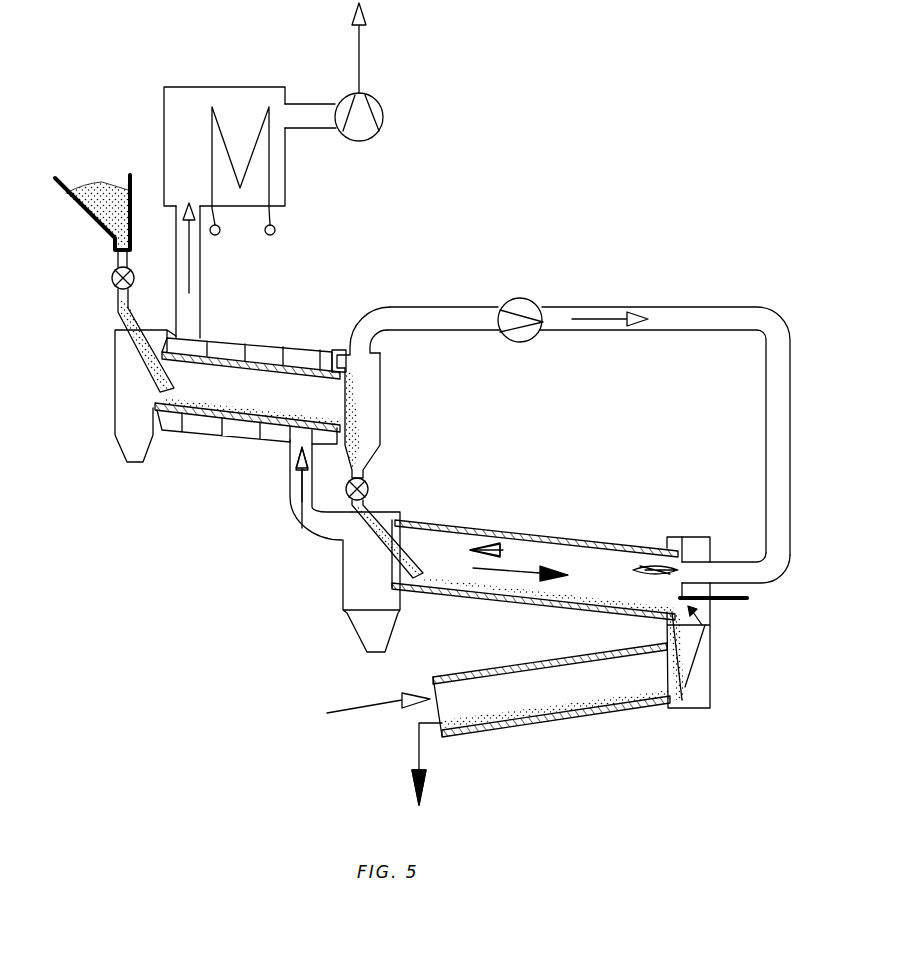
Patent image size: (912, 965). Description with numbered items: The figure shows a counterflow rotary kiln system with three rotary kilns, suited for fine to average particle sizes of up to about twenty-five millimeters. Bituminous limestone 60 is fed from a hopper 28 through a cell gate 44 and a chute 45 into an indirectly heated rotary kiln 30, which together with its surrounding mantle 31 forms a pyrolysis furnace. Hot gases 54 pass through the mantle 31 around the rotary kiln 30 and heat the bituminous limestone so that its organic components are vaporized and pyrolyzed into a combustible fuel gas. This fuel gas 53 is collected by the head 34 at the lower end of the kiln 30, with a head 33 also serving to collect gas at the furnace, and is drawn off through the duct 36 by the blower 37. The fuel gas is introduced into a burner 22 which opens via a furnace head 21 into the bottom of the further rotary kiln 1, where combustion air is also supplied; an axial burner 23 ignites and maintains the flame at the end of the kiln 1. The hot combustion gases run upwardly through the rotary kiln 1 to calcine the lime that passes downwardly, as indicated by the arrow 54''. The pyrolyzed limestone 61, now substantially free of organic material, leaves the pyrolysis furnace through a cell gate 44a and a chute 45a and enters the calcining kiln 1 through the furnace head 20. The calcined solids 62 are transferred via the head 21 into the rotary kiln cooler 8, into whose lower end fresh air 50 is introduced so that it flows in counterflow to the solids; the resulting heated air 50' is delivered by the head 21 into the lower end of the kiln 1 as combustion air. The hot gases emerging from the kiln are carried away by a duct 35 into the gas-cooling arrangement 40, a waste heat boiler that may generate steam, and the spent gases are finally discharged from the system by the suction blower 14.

The rotary kiln 1 is at (598, 523).
The rotary kiln cooler 8 is at (563, 717).
The suction blower 14 is at (383, 117).
The furnace head 20 is at (345, 583).
The furnace head 21 is at (672, 535).
The burner 22 is at (700, 535).
The axial burner 23 is at (735, 602).
The hopper 28 is at (71, 178).
The indirectly heated rotary kiln 30 is at (207, 418).
The mantle 31 is at (303, 342).
The head 33 is at (113, 413).
The head 34 is at (382, 370).
The product duct 35 is at (200, 310).
The duct 36 is at (395, 308).
The blower 37 is at (528, 296).
The gas-cooling arrangement 40 is at (229, 87).
The cell gate 44 is at (112, 278).
The cell gate 44a is at (368, 481).
The chute 45 is at (117, 297).
The chute 45a is at (370, 535).
The fresh air 50 is at (384, 749).
The heated air 50' is at (722, 652).
The fuel gas 53 is at (598, 320).
The hot gases 54 is at (370, 380).
The lime flow arrow 54'' is at (520, 605).
The bituminous limestone 60 is at (105, 182).
The pyrolyzed limestone 61 is at (352, 432).
The calcined solids 62 is at (681, 610).